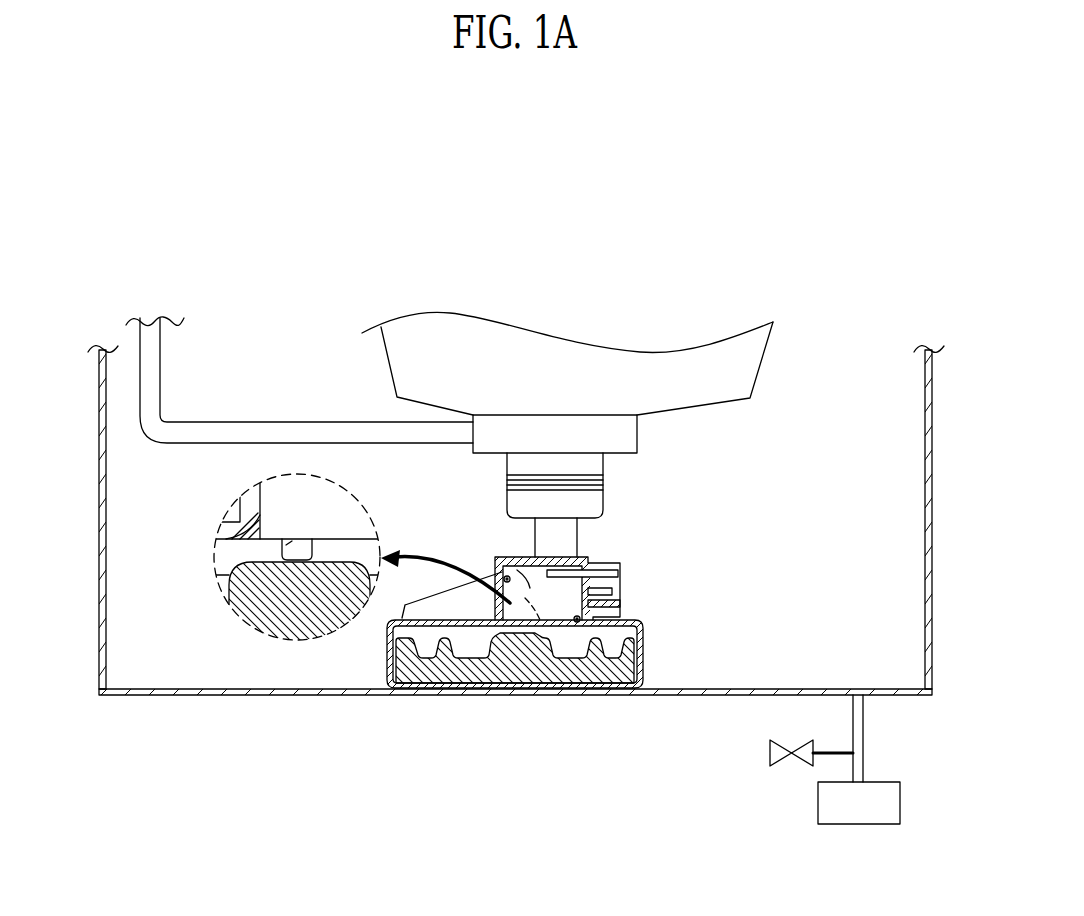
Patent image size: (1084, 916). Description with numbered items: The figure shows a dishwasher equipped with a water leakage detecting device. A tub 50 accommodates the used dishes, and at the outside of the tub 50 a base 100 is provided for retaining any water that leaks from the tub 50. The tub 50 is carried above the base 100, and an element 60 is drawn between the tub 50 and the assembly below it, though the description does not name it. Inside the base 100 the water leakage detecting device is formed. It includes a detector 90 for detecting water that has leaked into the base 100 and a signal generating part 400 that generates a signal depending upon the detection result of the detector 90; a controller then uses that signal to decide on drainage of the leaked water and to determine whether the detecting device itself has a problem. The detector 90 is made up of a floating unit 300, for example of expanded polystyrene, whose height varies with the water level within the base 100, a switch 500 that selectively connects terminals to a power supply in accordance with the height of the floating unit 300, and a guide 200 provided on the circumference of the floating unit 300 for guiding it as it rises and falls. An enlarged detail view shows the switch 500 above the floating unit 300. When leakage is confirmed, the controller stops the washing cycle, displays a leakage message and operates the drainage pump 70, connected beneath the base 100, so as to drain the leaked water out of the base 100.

The tub 50 is at (740, 376).
The rotation shaft 60 is at (596, 484).
The drainage pump 70 is at (818, 802).
The detector 90 is at (292, 758).
The base 100 is at (372, 697).
The guide 200 is at (647, 628).
The floating unit 300 is at (633, 668).
The signal generating part 400 is at (500, 566).
The switch 500 is at (284, 557).